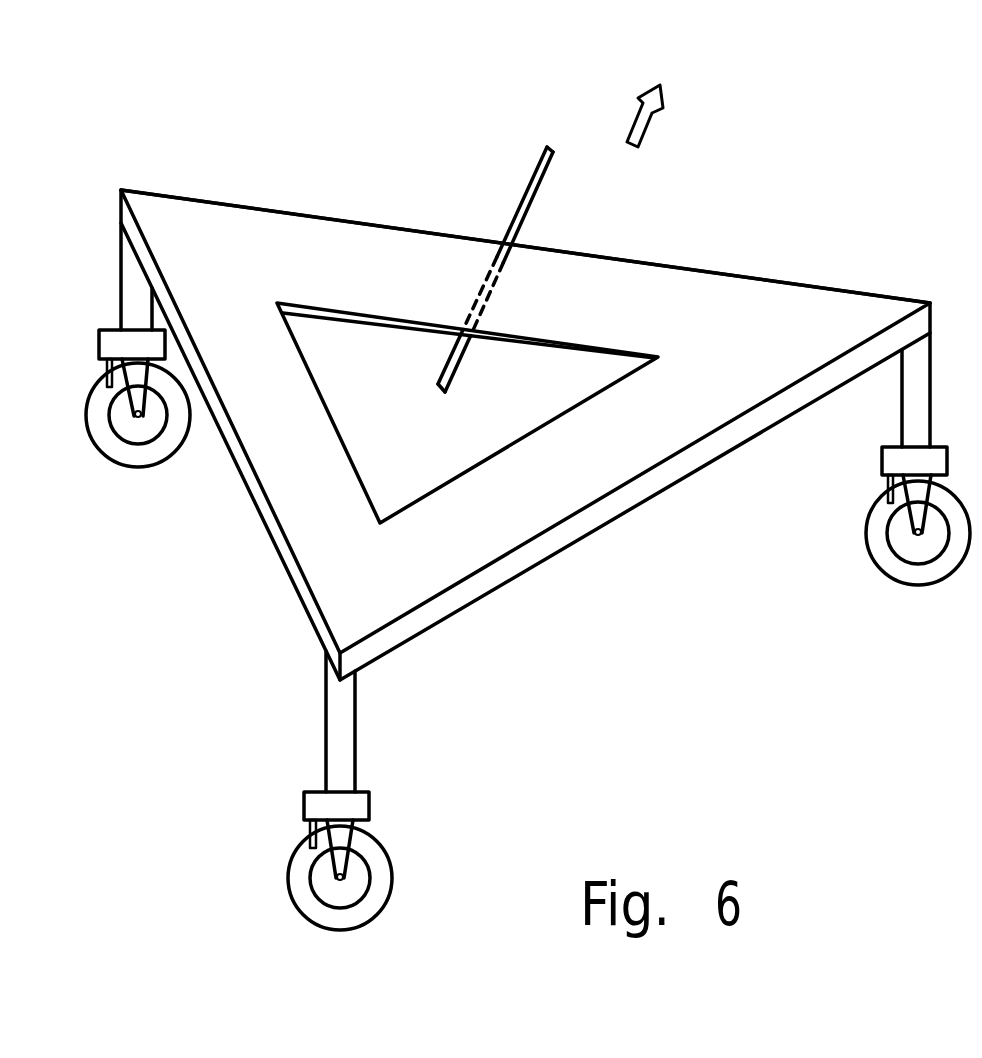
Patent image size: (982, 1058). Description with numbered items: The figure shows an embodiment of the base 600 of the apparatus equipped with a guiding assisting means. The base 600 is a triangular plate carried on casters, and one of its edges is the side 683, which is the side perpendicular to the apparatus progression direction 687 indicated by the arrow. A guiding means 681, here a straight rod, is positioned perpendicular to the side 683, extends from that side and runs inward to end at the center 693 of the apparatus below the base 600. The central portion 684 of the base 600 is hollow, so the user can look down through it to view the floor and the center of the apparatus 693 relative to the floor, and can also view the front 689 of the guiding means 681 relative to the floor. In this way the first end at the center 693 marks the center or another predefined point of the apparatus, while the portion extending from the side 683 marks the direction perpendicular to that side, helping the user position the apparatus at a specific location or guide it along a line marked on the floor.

The base 600 is at (742, 313).
The side 683 is at (263, 208).
The central portion 684 is at (528, 432).
The guiding means 681 is at (532, 187).
The front of guiding means 689 is at (552, 147).
The center of the apparatus 693 is at (440, 392).
The apparatus progression direction 687 is at (643, 120).